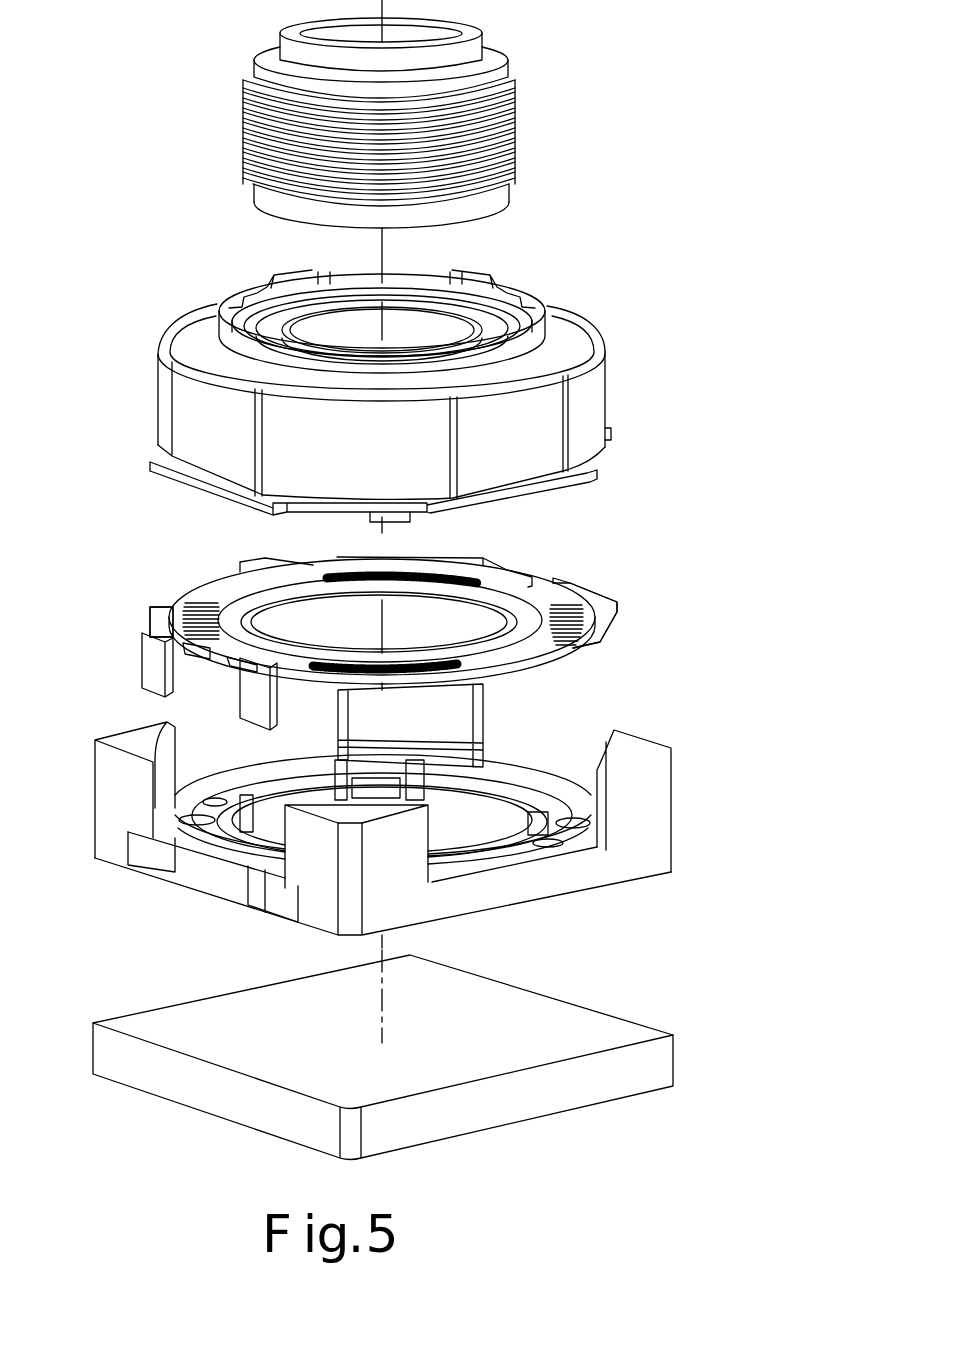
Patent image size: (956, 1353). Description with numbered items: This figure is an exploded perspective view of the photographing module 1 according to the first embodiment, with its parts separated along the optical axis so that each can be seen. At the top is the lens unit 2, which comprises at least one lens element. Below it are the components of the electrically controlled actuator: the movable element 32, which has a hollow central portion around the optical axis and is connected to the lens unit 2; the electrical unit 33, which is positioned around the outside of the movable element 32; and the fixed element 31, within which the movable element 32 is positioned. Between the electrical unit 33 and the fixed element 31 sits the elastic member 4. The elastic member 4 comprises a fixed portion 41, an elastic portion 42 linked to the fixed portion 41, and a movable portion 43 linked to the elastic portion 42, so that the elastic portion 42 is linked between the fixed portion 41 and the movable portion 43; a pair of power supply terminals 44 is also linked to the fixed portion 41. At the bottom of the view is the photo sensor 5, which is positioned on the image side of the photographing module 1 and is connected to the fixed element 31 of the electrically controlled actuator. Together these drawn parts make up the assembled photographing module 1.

The photographing module 1 is at (763, 106).
The lens unit 2 is at (594, 132).
The fixed element 31 is at (641, 785).
The movable element 32 is at (478, 290).
The electrical unit 33 is at (588, 396).
The elastic member 4 is at (643, 599).
The fixed portion 41 is at (243, 578).
The elastic portion 42 is at (455, 578).
The movable portion 43 is at (287, 602).
The power supply terminals 44 is at (150, 685).
The photo sensor 5 is at (643, 978).